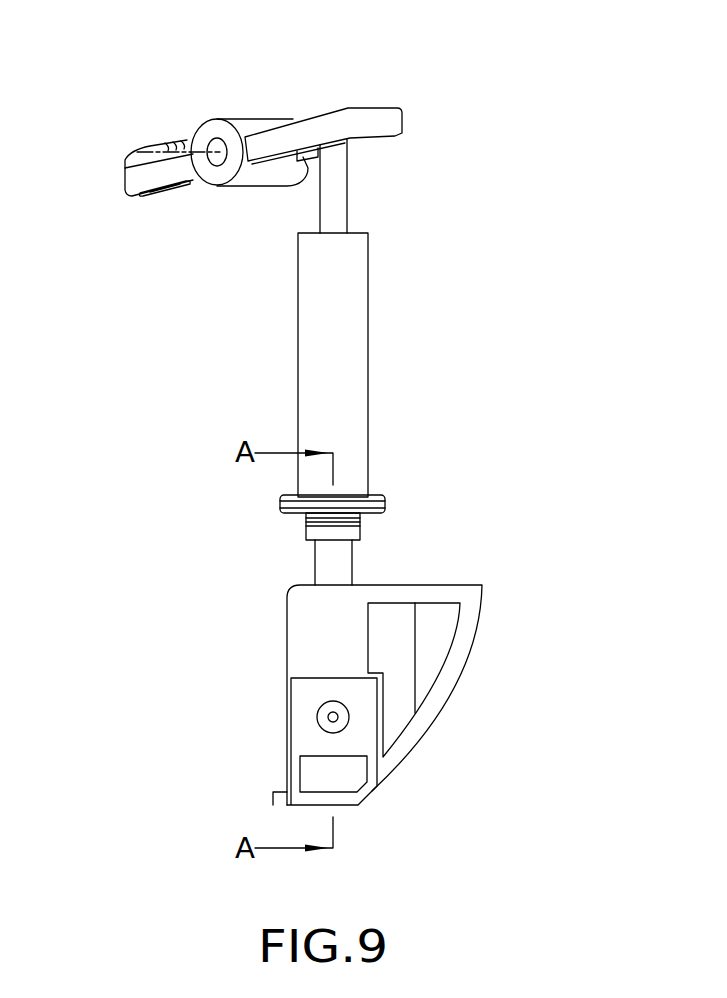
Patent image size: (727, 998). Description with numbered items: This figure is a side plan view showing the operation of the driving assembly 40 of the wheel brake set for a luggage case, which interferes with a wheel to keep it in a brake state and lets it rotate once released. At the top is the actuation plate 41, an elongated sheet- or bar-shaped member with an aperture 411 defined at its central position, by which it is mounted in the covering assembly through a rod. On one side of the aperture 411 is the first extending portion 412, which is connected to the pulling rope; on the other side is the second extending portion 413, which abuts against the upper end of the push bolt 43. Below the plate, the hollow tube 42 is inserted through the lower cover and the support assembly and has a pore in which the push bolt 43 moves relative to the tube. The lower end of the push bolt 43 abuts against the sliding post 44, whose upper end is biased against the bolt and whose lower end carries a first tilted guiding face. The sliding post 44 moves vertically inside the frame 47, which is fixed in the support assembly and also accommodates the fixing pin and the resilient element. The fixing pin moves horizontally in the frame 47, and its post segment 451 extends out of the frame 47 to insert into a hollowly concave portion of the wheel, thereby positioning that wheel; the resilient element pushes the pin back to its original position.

The driving assembly 40 is at (417, 367).
The actuation plate 41 is at (263, 120).
The aperture 411 is at (215, 148).
The first extending portion 412 is at (128, 153).
The second extending portion 413 is at (383, 117).
The hollow tube 42 is at (310, 388).
The push bolt 43 is at (333, 200).
The sliding post 44 is at (323, 565).
The frame 47 is at (465, 627).
The post segment 451 is at (320, 718).